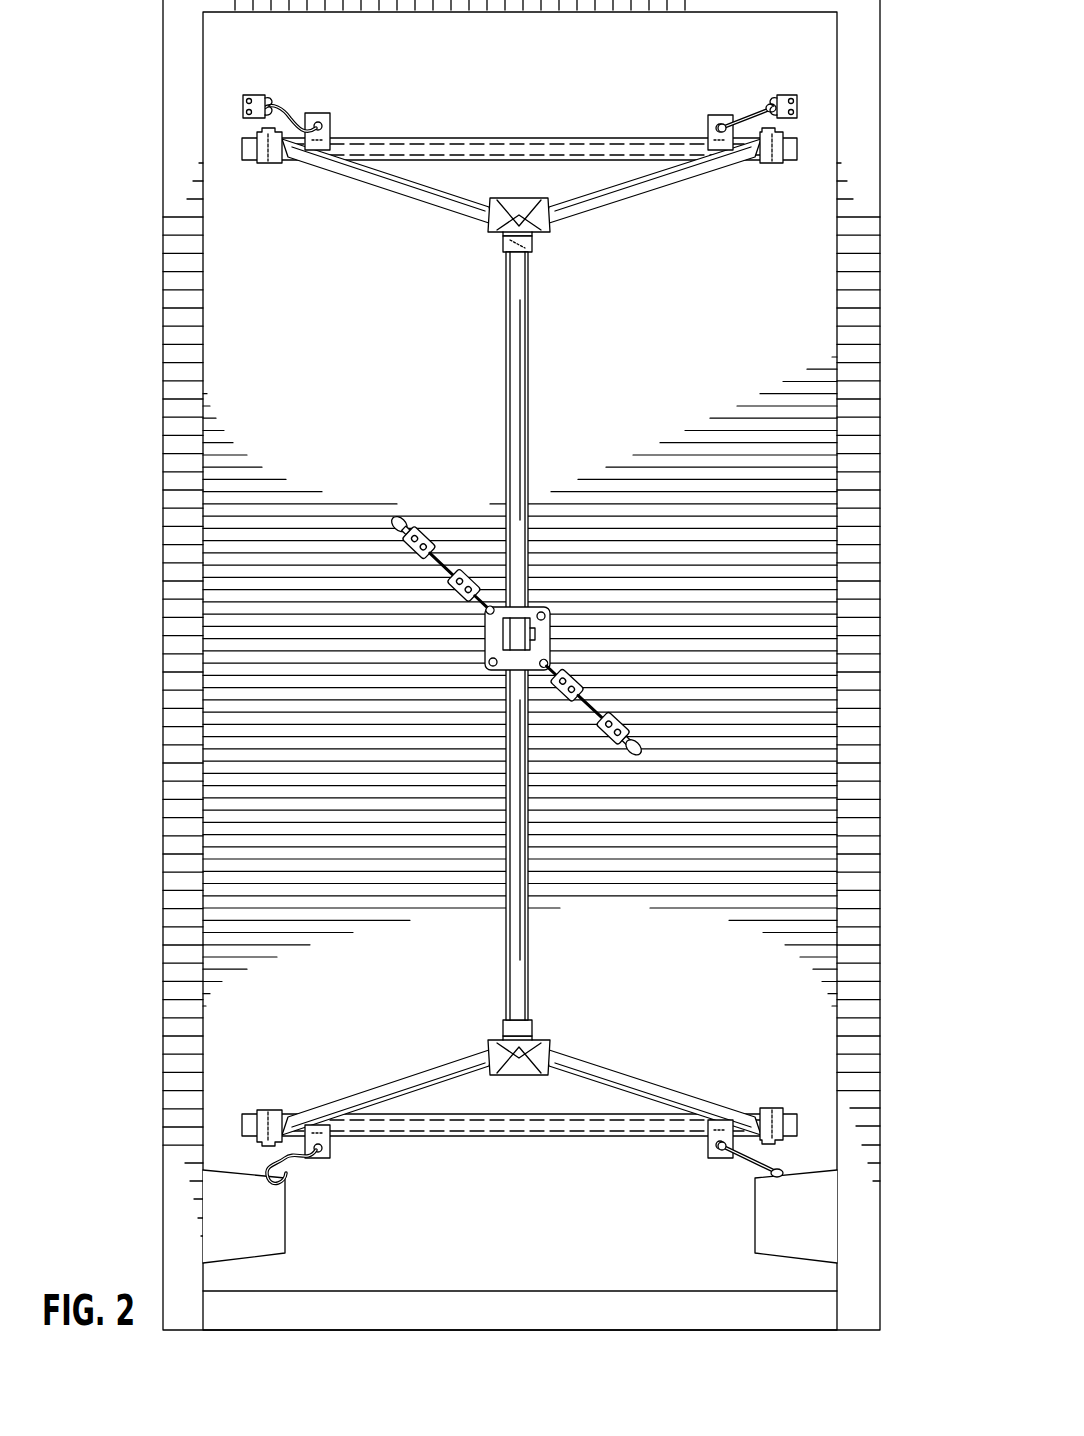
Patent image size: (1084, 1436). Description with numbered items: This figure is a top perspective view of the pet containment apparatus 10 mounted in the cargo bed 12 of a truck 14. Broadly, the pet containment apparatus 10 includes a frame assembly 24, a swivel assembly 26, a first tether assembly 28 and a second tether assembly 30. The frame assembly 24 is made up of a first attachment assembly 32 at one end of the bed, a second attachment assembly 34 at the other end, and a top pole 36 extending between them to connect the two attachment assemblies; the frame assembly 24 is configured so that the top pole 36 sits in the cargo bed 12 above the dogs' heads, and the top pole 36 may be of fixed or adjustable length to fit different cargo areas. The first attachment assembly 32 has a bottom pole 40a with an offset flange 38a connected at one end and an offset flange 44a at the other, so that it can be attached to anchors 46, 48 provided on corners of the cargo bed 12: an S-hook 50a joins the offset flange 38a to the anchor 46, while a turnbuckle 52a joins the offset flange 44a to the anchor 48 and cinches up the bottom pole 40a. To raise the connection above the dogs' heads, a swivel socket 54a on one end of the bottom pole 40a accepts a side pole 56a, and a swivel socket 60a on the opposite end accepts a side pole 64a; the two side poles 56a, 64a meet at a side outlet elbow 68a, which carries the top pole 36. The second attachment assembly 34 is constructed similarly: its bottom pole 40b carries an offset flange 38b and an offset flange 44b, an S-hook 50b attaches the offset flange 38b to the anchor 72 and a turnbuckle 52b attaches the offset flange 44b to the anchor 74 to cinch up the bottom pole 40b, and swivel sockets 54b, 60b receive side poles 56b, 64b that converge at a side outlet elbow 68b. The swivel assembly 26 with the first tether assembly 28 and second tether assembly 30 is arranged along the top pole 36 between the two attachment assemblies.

The pet containment apparatus 10 is at (525, 638).
The cargo bed 12 is at (837, 473).
The truck 14 is at (163, 620).
The frame assembly 24 is at (505, 312).
The swivel assembly 26 is at (550, 636).
The first tether assembly 28 is at (595, 705).
The second tether assembly 30 is at (420, 548).
The first attachment assembly 32 is at (562, 1045).
The second attachment assembly 34 is at (568, 212).
The top pole 36 is at (530, 890).
The offset flange 38a is at (330, 1142).
The offset flange 38b is at (328, 128).
The bottom pole 40a is at (505, 1137).
The bottom pole 40b is at (505, 140).
The offset flange 44a is at (706, 1142).
The offset flange 44b is at (708, 118).
The anchor 46 is at (248, 1174).
The anchor 48 is at (800, 1183).
The S-hook 50a is at (288, 1176).
The S-hook 50b is at (292, 108).
The turnbuckle 52a is at (745, 1172).
The turnbuckle 52b is at (742, 110).
The swivel socket 54a is at (268, 1122).
The swivel socket 54b is at (270, 152).
The side pole 56a is at (432, 1078).
The side pole 56b is at (372, 178).
The swivel socket 60a is at (770, 1112).
The swivel socket 60b is at (778, 162).
The side pole 64a is at (600, 1068).
The side pole 64b is at (672, 182).
The side outlet elbow 68a is at (502, 1028).
The side outlet elbow 68b is at (532, 238).
The anchor 72 is at (260, 98).
The anchor 74 is at (778, 95).